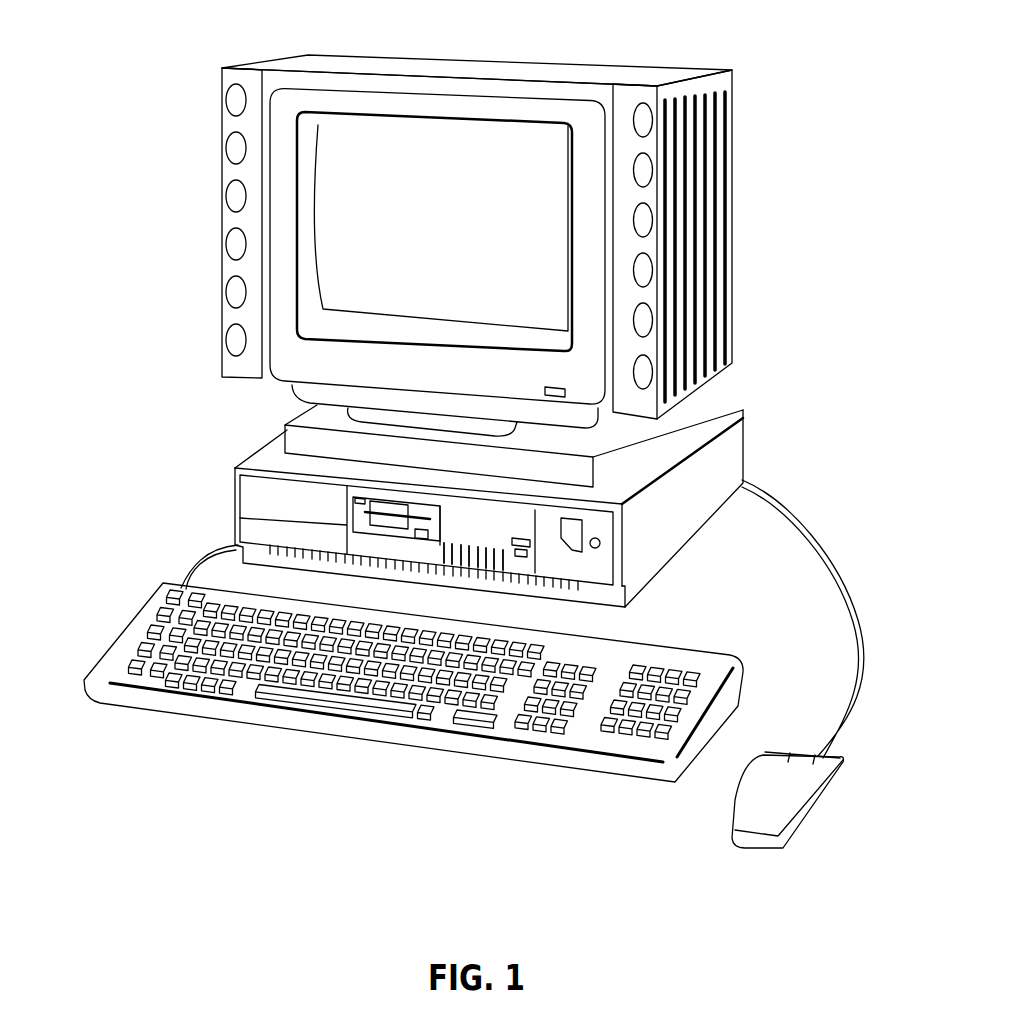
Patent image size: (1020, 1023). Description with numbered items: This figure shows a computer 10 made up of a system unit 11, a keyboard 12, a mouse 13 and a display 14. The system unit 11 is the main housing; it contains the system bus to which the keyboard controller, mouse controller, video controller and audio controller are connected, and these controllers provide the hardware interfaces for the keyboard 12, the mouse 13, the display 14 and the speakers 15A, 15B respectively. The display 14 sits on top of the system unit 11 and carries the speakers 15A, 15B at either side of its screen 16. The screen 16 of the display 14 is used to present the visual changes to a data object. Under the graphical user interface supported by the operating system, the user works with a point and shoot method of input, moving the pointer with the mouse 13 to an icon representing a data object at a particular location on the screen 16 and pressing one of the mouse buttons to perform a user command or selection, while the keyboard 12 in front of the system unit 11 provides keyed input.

The computer 10 is at (62, 306).
The system unit 11 is at (235, 490).
The keyboard 12 is at (110, 703).
The mouse 13 is at (832, 797).
The display 14 is at (645, 75).
The speaker 15A is at (222, 222).
The speaker 15B is at (660, 244).
The screen 16 is at (400, 261).